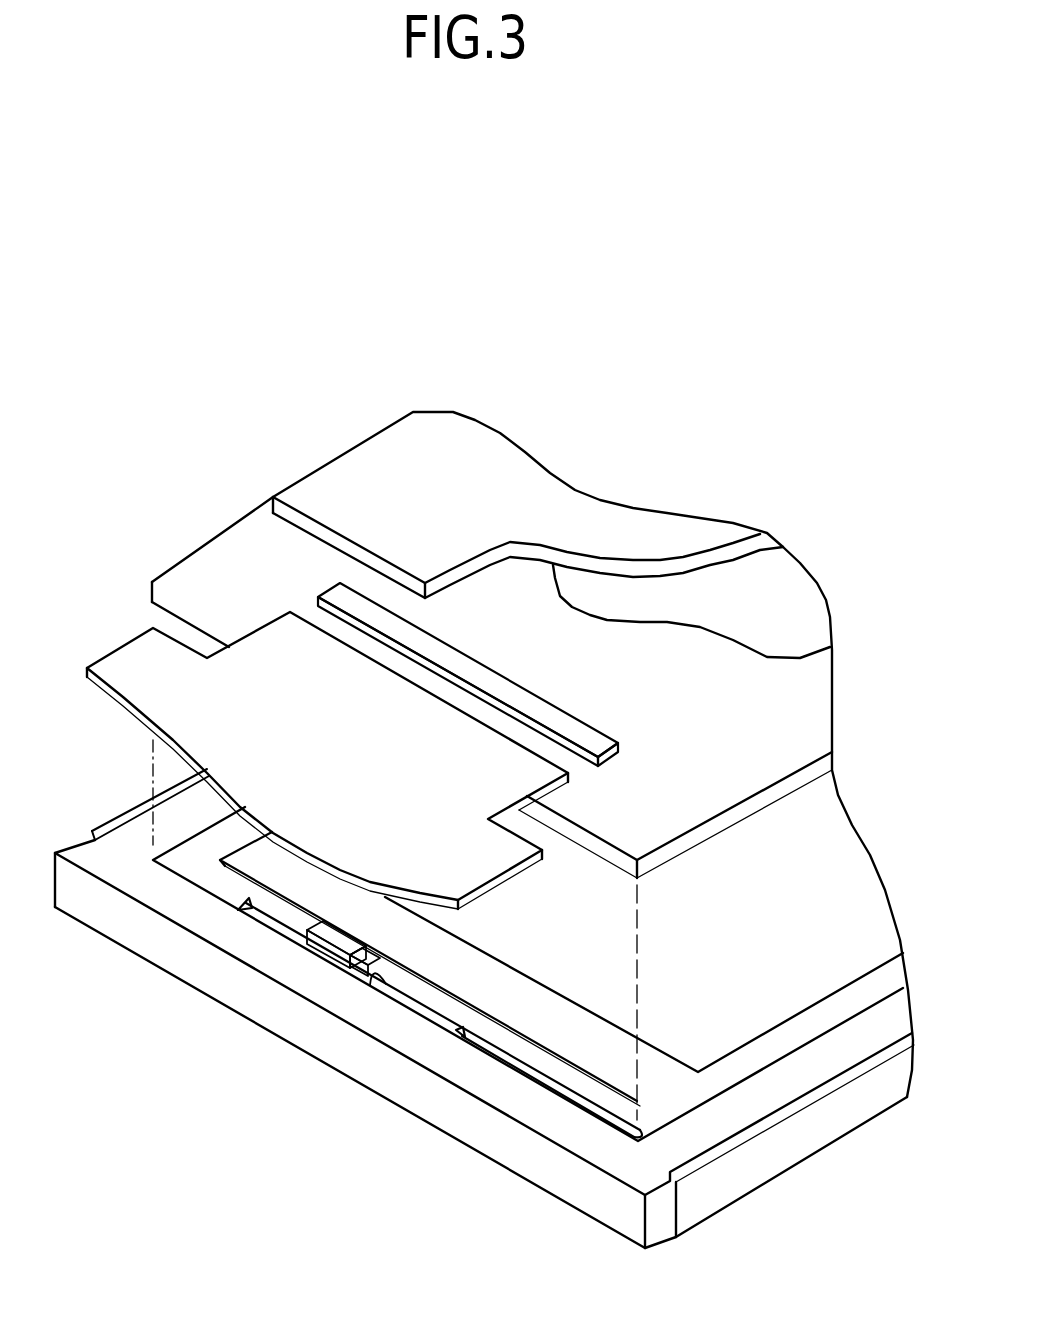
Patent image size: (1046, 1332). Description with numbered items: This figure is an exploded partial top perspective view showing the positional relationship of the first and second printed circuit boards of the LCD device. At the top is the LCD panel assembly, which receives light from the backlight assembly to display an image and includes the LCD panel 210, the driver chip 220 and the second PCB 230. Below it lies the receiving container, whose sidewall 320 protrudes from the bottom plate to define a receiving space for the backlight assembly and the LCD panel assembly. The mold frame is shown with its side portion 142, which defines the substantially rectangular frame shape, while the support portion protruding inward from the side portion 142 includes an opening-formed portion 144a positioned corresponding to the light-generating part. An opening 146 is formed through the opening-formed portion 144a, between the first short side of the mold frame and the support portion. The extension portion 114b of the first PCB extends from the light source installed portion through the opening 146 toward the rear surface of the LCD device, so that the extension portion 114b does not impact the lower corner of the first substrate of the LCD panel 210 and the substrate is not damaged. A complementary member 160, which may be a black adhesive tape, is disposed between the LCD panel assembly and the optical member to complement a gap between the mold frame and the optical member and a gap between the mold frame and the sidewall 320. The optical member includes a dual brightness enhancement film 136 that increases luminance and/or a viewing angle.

The LCD panel 210 is at (258, 490).
The driver chip 220 is at (335, 594).
The second PCB 230 is at (120, 658).
The sidewall 320 is at (103, 830).
The side portion 142 is at (228, 985).
The opening-formed portion 144a is at (232, 893).
The extension portion 114b is at (322, 951).
The opening 146 is at (372, 965).
The complementary member 160 is at (500, 998).
The dual brightness enhancement film 136 is at (607, 985).